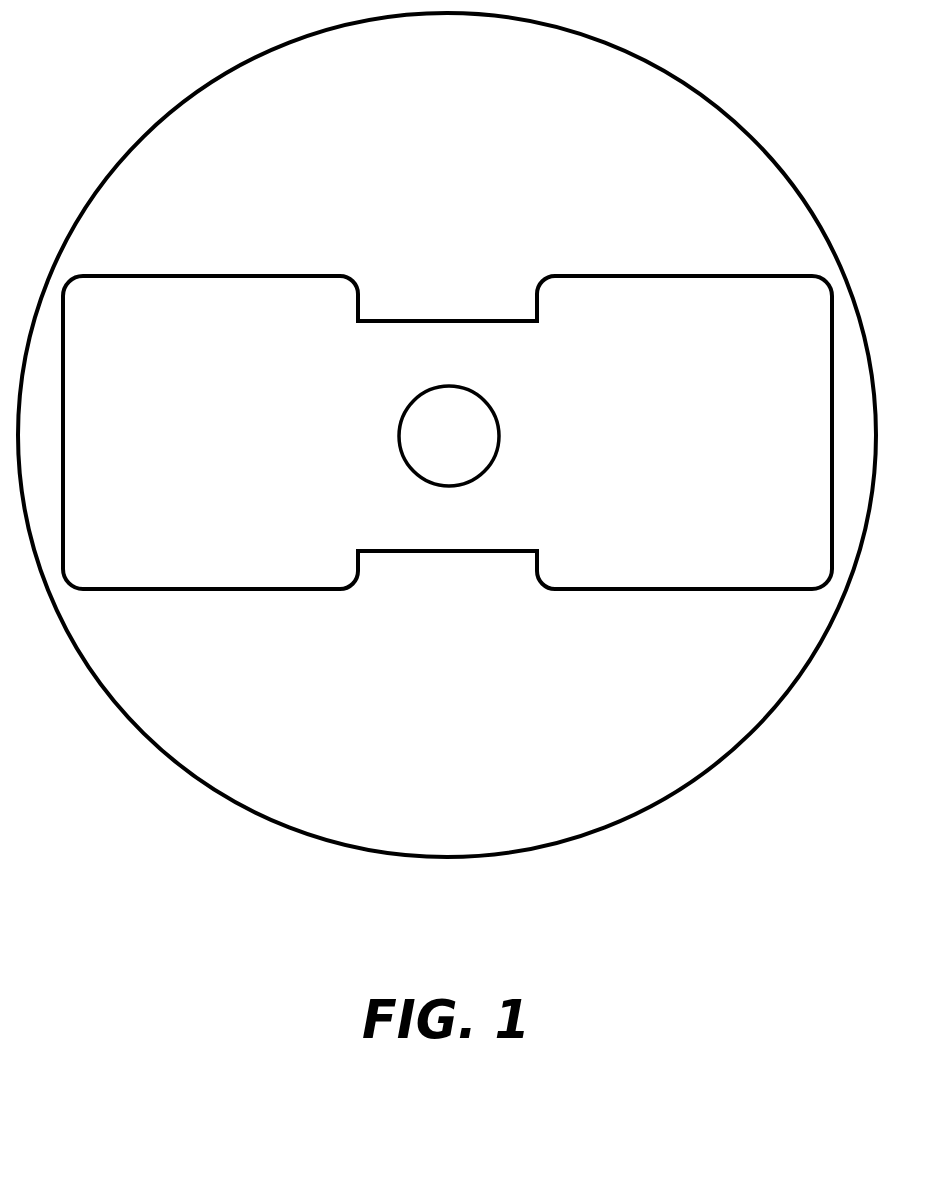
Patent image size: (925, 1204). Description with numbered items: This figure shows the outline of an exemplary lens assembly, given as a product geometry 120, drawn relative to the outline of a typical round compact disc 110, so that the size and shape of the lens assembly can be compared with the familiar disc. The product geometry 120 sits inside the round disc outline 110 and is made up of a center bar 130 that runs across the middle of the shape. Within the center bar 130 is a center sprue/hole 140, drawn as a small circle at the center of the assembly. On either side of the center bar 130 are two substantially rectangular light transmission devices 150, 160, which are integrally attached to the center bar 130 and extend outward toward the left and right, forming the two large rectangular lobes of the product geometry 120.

The wafer 110 is at (711, 97).
The product geometry 120 is at (678, 303).
The center bar 130 is at (497, 523).
The center sprue/hole 140 is at (474, 451).
The light transmission device 150 is at (700, 450).
The light transmission device 160 is at (231, 448).